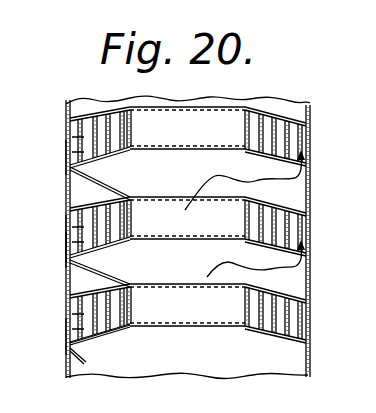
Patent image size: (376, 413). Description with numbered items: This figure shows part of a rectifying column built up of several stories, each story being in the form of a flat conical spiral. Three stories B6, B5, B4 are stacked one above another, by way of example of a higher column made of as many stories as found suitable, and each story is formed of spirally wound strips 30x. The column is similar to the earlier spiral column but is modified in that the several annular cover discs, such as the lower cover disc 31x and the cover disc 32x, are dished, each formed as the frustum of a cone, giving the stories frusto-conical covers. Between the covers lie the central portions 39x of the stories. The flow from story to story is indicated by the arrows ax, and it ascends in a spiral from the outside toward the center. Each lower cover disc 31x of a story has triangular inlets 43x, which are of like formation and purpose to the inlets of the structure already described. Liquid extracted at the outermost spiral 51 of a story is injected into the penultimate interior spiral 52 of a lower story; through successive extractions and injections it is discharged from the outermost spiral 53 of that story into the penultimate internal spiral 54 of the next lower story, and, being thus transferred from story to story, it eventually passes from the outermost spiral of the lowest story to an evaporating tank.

The spirally wound strips 30x is at (131, 118).
The lower cover disc 31x is at (100, 344).
The cover disc 32x is at (293, 300).
The platform section 39x is at (187, 216).
The triangular inlets 43x is at (311, 181).
The arrows ax is at (208, 172).
The outermost spiral 51 is at (71, 117).
The penultimate interior spiral 52 is at (65, 228).
The outermost spiral 53 is at (65, 257).
The penultimate internal spiral 54 is at (67, 339).
The story B6 is at (64, 153).
The story B5 is at (64, 248).
The story B4 is at (64, 332).